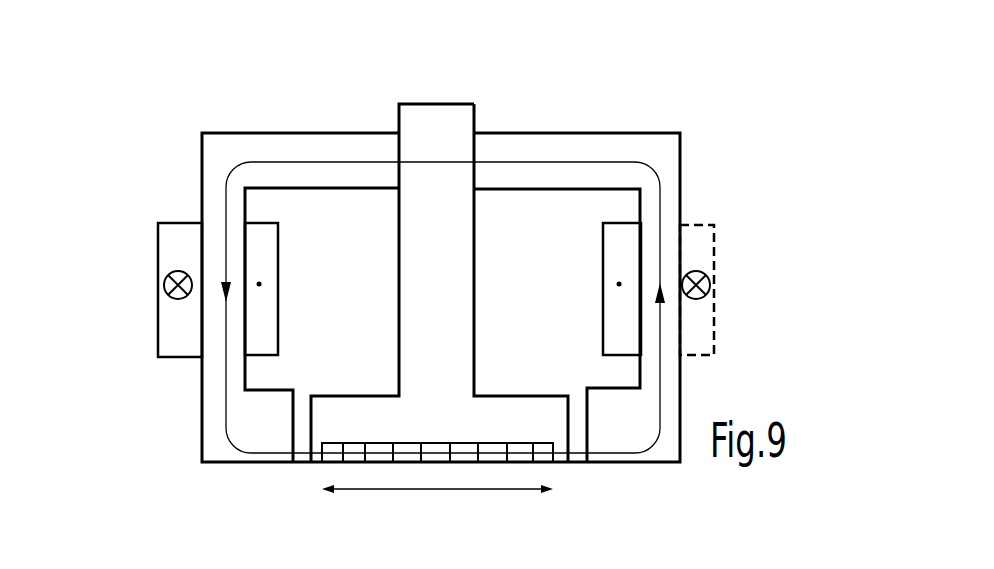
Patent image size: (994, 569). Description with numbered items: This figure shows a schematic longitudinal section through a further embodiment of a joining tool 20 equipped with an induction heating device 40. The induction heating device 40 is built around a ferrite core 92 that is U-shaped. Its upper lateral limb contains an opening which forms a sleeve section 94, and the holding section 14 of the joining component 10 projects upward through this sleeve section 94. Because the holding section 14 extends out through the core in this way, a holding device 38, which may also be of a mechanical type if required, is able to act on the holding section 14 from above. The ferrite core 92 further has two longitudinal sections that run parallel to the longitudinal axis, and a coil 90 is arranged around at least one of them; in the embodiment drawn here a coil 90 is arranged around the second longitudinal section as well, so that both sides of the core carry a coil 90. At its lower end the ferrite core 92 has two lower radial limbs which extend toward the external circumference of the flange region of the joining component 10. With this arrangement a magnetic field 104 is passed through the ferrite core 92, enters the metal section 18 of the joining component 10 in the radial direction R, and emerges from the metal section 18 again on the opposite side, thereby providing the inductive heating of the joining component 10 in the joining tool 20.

The joining component 10 is at (457, 349).
The holding section 14 is at (425, 120).
The metal section 18 is at (332, 452).
The joining tool 20 is at (713, 117).
The holding device 38 is at (474, 110).
The induction heating device 40 is at (692, 218).
The coil 90 is at (177, 243).
The ferrite core 92 is at (268, 150).
The sleeve section 94 is at (478, 152).
The magnetic field 104 is at (555, 162).
The radial direction R is at (438, 490).